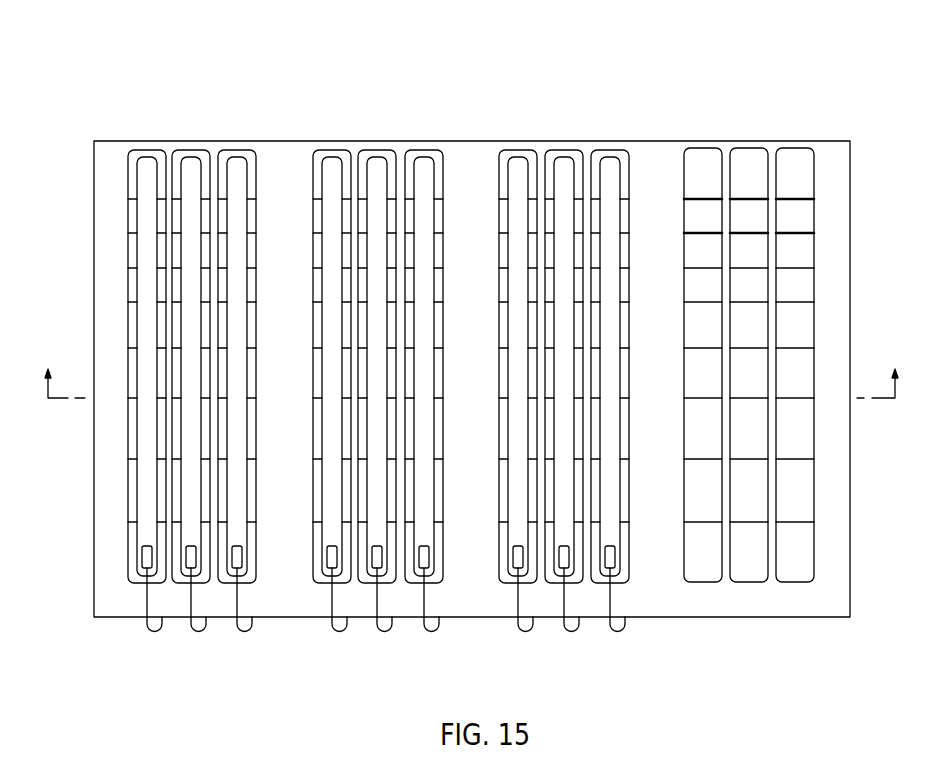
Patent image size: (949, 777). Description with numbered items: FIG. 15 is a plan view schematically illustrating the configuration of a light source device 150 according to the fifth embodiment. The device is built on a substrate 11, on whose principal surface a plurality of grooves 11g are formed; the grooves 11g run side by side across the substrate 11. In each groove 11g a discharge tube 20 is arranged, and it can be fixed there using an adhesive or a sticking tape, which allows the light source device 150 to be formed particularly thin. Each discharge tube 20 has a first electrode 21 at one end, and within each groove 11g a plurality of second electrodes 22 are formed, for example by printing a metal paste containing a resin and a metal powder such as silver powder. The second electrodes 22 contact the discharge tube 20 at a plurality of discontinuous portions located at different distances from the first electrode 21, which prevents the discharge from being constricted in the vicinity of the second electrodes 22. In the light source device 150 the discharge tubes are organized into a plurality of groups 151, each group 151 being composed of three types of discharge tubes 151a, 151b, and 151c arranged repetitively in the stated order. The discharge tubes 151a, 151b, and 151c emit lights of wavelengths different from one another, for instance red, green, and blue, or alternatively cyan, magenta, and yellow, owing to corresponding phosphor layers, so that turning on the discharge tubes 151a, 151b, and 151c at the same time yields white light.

The light source device 150 is at (58, 158).
The substrate 11 is at (851, 438).
The groove 11g is at (801, 152).
The second electrode 22 is at (812, 200).
The group 151 is at (267, 63).
The discharge tube 151a is at (148, 160).
The discharge tube 151b is at (193, 160).
The discharge tube 151c is at (238, 160).
The discharge tube 20 is at (143, 493).
The first electrode 21 is at (145, 557).